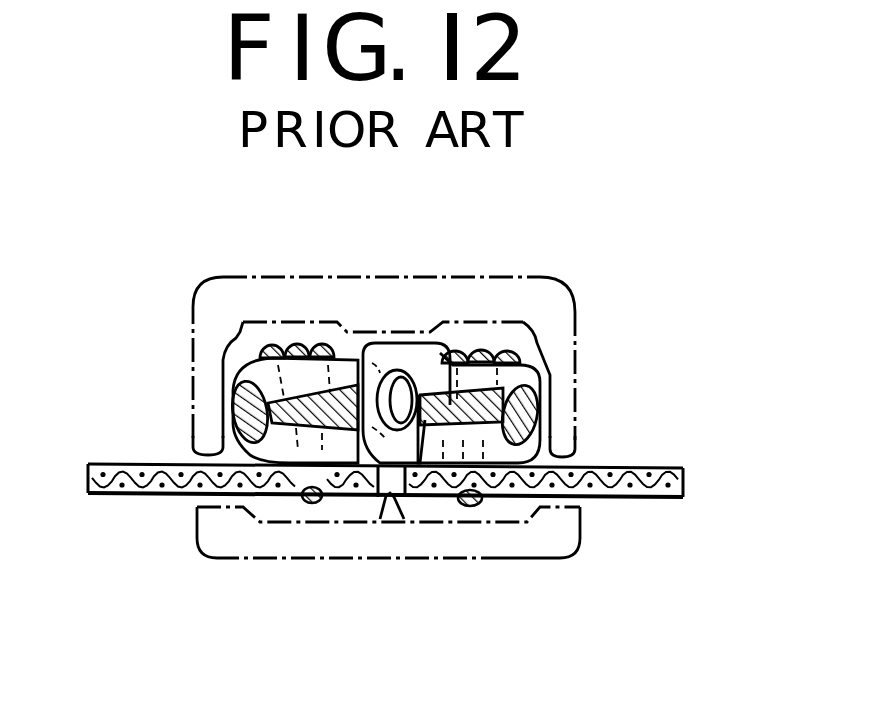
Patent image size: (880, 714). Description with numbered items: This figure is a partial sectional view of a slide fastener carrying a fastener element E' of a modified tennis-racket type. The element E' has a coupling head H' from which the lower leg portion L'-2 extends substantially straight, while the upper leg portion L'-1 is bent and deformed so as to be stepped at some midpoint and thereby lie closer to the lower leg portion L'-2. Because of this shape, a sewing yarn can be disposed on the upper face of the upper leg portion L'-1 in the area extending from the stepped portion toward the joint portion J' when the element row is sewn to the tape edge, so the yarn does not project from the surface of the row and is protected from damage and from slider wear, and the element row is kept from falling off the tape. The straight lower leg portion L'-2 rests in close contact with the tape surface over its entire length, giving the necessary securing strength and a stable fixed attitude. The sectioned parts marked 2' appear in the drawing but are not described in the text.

The element E' is at (441, 417).
The joint portion J' is at (589, 407).
The upper leg portion L'-1 is at (505, 319).
The lower leg portion L'-2 is at (397, 500).
The coupling head H' is at (377, 500).
The rollers 2' is at (352, 541).